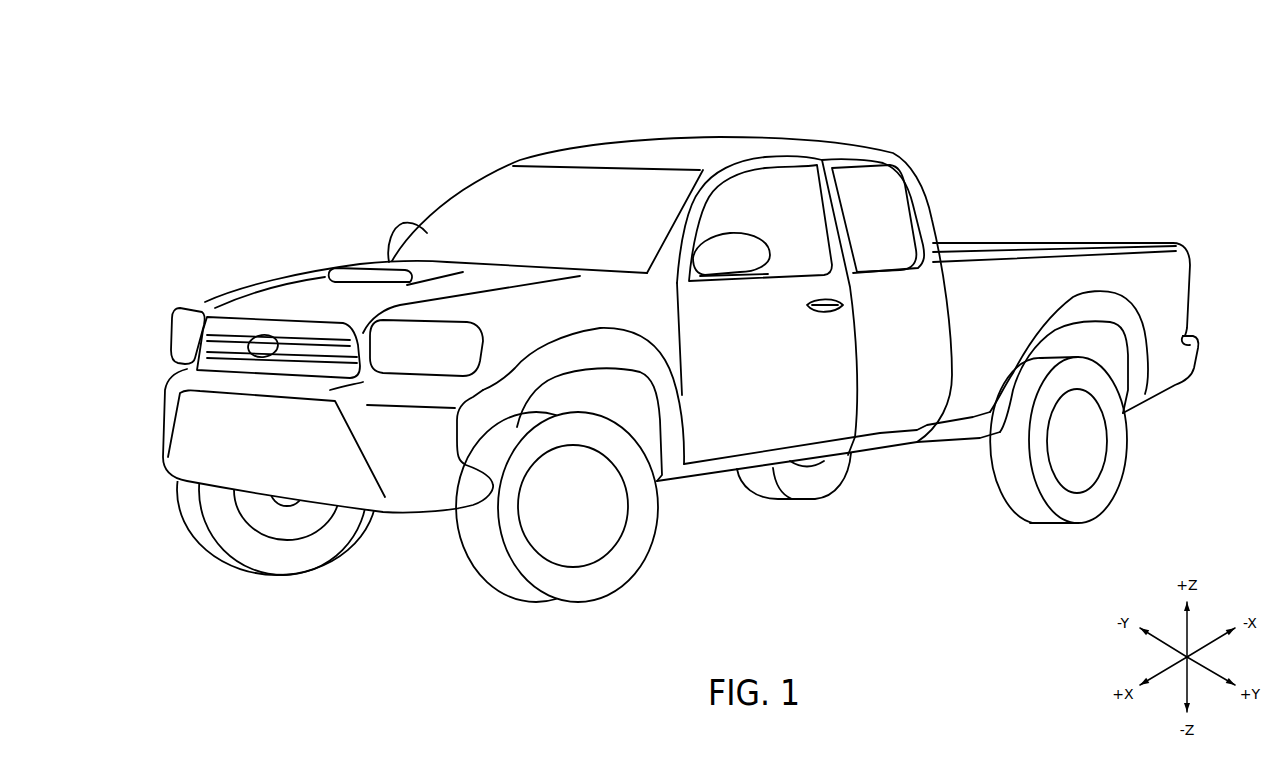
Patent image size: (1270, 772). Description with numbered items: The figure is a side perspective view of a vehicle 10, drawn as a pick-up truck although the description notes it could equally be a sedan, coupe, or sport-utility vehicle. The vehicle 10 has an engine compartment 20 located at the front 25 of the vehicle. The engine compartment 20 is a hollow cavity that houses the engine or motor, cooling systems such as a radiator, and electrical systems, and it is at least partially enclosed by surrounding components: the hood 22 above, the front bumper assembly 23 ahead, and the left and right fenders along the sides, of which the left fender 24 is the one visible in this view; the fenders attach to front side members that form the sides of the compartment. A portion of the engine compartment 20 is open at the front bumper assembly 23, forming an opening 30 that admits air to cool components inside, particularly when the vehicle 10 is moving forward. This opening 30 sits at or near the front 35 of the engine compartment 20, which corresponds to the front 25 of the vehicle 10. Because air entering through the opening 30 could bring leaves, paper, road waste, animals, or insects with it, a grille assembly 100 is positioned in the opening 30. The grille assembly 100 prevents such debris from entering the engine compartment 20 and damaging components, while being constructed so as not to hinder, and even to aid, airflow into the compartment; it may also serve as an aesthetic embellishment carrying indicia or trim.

The vehicle 10 is at (793, 369).
The engine compartment 20 is at (270, 292).
The hood 22 is at (358, 277).
The front bumper assembly 23 is at (141, 435).
The left fender 24 is at (597, 344).
The front of the vehicle 25 is at (170, 521).
The opening 30 is at (293, 369).
The front of the engine compartment 35 is at (207, 263).
The grille assembly 100 is at (248, 347).